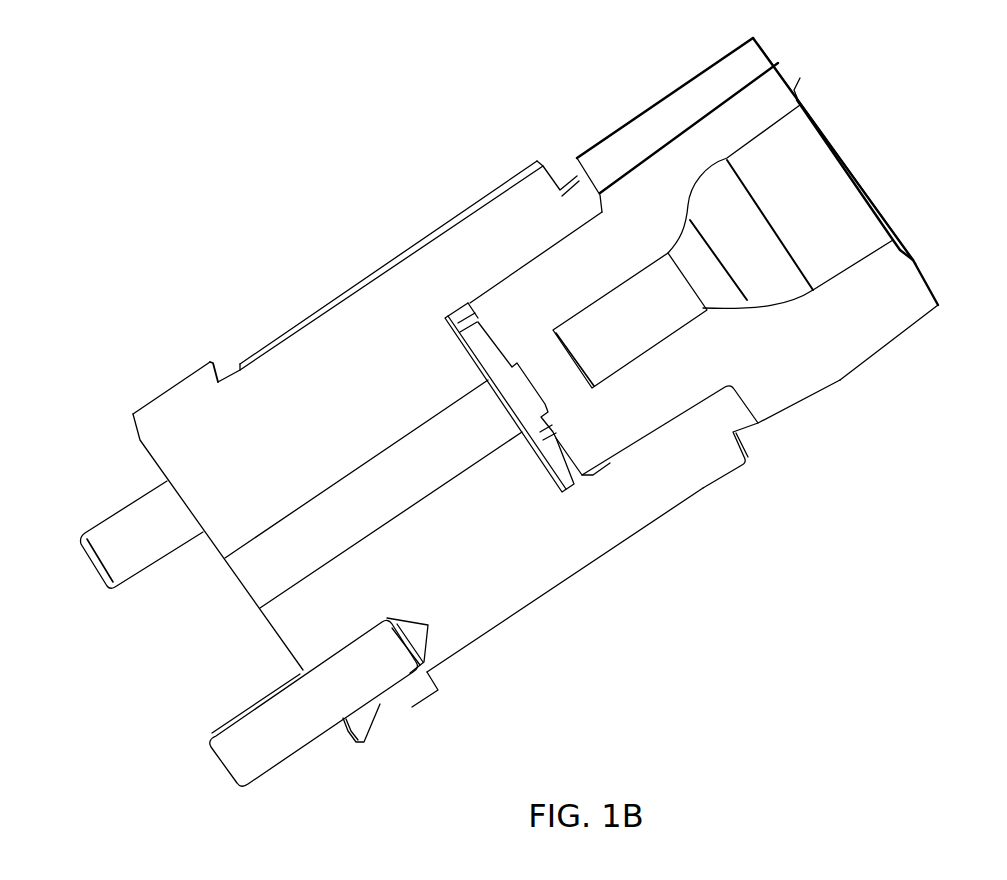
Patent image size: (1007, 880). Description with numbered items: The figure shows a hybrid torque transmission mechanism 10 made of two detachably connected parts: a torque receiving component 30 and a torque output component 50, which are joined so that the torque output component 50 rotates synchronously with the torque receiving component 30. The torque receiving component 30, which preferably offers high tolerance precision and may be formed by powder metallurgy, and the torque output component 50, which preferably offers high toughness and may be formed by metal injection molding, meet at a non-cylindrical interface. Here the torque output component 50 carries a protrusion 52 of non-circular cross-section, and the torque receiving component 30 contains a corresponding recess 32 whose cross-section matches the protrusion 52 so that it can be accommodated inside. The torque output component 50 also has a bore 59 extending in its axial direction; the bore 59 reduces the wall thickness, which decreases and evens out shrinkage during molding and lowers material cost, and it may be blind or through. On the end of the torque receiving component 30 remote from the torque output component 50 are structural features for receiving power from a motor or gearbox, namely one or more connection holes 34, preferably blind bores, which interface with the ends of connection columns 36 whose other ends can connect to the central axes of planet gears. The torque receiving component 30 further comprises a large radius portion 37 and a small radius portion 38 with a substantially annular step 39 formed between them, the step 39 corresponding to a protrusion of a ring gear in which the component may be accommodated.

The torque transmission mechanism 10 is at (223, 148).
The torque receiving component 30 is at (490, 533).
The recess 32 is at (560, 462).
The connection holes 34 is at (380, 697).
The connection columns 36 is at (272, 722).
The large radius portion 37 is at (168, 388).
The small radius portion 38 is at (363, 282).
The step 39 is at (219, 379).
The torque output component 50 is at (797, 365).
The protrusion 52 is at (648, 403).
The bore 59 is at (730, 267).